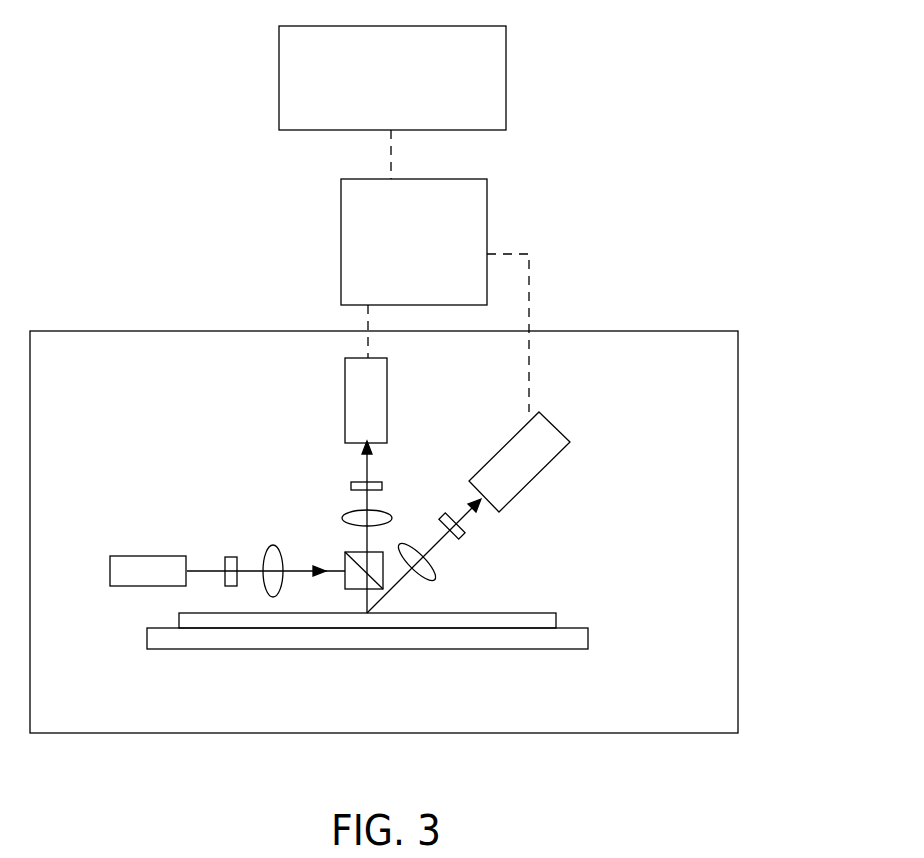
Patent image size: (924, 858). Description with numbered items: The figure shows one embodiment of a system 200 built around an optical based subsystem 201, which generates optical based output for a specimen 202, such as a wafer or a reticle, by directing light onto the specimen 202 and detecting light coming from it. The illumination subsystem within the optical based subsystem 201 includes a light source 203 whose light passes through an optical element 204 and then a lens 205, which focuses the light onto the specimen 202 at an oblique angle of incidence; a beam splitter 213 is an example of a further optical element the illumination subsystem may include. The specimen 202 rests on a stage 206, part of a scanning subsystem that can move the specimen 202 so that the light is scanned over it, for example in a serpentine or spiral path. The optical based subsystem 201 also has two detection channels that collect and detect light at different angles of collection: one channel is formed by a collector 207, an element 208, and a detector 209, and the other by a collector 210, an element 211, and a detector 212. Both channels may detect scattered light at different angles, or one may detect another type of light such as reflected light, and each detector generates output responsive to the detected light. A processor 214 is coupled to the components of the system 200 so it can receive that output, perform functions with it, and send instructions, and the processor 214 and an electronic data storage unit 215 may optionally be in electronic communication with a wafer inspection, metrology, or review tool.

The system 200 is at (171, 98).
The optical based subsystem 201 is at (739, 352).
The specimen 202 is at (178, 614).
The light source 203 is at (122, 557).
The optical element 204 is at (232, 555).
The lens 205 is at (270, 546).
The stage 206 is at (147, 644).
The collector 207 is at (343, 518).
The element 208 is at (351, 484).
The detector 209 is at (345, 404).
The collector 210 is at (435, 578).
The element 211 is at (462, 538).
The detector 212 is at (551, 463).
The beam splitter 213 is at (348, 552).
The processor 214 is at (392, 255).
The electronic data storage unit 215 is at (392, 78).